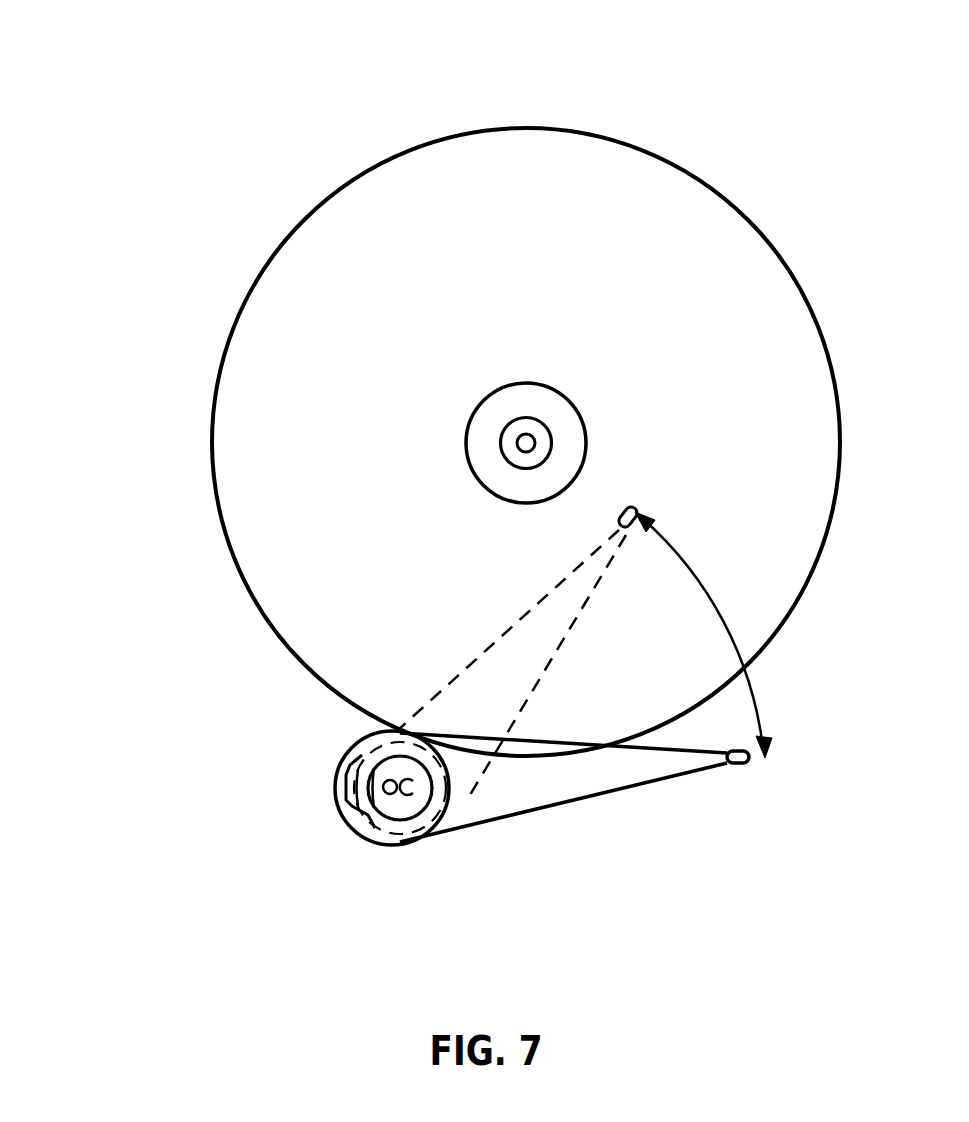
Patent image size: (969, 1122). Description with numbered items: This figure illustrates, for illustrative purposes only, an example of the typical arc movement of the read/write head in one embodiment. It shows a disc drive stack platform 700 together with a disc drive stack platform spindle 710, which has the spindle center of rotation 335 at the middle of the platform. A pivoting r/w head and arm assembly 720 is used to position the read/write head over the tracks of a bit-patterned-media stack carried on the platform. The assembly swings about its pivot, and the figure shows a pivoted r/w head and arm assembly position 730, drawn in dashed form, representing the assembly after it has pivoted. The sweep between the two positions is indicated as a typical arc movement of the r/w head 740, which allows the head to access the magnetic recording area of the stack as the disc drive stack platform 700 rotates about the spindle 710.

The disc drive stack platform 700 is at (448, 137).
The disc drive stack platform spindle 710 is at (467, 475).
The spindle center of rotation 335 is at (518, 440).
The pivoting r/w head and arm assembly 720 is at (502, 822).
The pivoted r/w head and arm assembly position 730 is at (445, 677).
The typical arc movement of the r/w head 740 is at (713, 608).